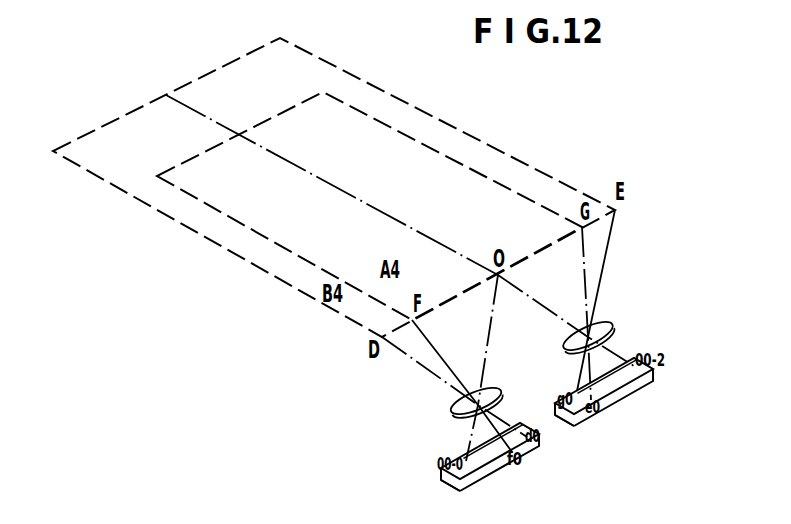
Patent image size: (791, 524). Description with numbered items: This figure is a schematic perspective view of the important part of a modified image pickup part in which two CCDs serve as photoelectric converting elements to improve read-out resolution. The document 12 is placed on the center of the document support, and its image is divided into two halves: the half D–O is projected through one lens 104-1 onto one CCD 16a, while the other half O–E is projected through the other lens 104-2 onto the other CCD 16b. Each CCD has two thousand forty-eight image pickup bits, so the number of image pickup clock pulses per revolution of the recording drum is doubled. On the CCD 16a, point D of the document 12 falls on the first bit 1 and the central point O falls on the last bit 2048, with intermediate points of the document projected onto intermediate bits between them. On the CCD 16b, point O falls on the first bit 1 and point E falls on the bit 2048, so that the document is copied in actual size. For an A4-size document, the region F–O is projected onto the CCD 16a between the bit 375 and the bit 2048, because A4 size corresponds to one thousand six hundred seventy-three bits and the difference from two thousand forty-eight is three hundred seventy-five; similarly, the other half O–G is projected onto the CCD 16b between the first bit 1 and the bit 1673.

The document 12 is at (553, 178).
The first imaging lens 104-1 is at (488, 388).
The second imaging lens 104-2 is at (607, 325).
The CCD 16a is at (551, 429).
The CCD 16b is at (606, 408).
The 375th bit 375 is at (521, 443).
The 1673rd bit 1673 is at (612, 396).
The 2048th bit 2048 is at (524, 469).
The first bit 1 is at (497, 473).